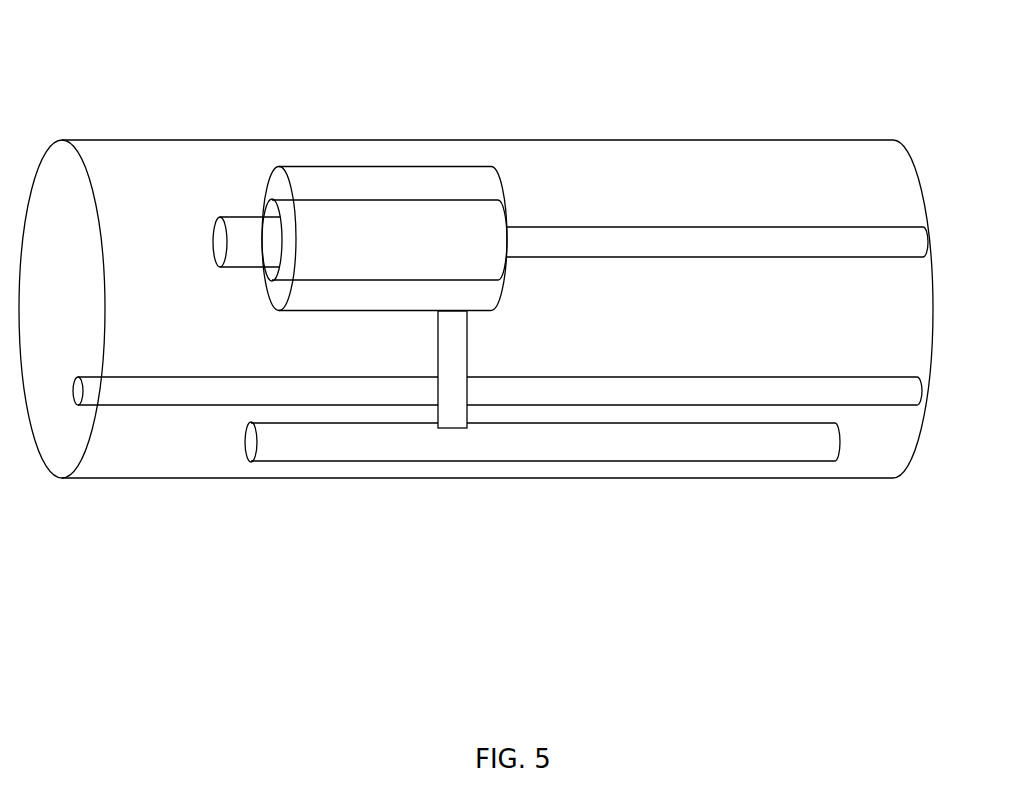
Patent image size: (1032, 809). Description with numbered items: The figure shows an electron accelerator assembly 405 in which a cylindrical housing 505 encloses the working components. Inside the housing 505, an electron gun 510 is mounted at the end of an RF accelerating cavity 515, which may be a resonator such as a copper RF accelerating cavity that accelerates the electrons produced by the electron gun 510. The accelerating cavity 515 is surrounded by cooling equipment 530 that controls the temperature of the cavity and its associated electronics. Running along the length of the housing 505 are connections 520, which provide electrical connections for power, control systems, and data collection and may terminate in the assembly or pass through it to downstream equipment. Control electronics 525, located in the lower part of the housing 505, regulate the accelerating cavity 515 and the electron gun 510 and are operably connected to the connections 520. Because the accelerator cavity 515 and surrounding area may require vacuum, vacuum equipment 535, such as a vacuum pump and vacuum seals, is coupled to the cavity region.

The electron accelerator assembly 405 is at (476, 281).
The housing 505 is at (598, 139).
The electron gun 510 is at (224, 214).
The RF accelerating cavity 515 is at (380, 200).
The connections 520 is at (73, 409).
The control electronics 525 is at (328, 454).
The cooling equipment 530 is at (461, 180).
The vacuum equipment 535 is at (471, 426).